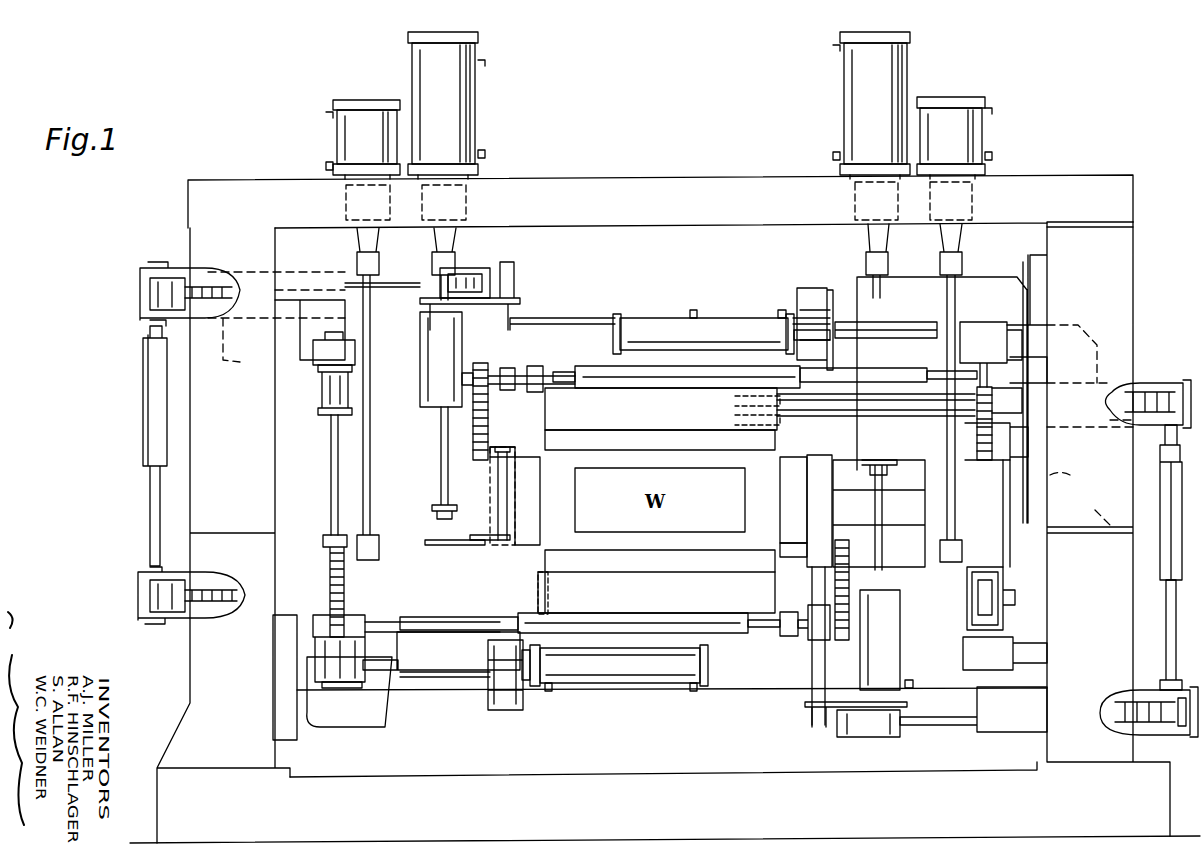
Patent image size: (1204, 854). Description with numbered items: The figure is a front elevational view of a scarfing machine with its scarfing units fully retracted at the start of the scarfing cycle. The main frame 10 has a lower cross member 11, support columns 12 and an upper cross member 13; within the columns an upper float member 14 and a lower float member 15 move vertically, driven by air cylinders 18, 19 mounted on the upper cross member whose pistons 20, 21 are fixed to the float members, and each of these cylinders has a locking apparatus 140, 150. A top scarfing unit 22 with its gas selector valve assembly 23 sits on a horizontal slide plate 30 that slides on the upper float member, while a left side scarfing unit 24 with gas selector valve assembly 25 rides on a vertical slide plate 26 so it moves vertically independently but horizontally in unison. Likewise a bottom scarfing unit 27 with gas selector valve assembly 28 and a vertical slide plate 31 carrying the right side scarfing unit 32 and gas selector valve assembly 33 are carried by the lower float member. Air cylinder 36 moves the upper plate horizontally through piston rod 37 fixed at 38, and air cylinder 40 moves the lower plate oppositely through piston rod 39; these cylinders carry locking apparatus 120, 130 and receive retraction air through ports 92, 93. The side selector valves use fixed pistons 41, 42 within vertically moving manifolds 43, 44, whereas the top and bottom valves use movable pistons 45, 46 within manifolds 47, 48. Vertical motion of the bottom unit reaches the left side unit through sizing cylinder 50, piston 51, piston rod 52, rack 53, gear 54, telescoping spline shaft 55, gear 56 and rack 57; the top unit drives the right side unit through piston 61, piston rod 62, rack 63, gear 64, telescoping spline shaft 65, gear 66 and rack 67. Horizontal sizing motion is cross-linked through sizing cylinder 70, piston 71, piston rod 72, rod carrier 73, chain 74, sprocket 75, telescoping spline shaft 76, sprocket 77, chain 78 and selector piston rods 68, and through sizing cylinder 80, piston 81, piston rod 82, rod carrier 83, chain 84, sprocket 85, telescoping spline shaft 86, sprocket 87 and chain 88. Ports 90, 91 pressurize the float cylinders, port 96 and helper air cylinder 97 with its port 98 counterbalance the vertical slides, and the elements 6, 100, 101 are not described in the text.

The main frame 10 is at (1150, 230).
The lower cross member 11 is at (465, 792).
The support columns 12 is at (210, 688).
The upper cross member 13 is at (207, 188).
The upper float member 14 is at (1008, 278).
The lower float member 15 is at (1012, 565).
The air cylinder 18 is at (465, 96).
The air cylinder 19 is at (350, 130).
The piston 20 is at (456, 242).
The piston 21 is at (384, 290).
The top scarfing unit 22 is at (641, 452).
The gas selector valve assembly 23 is at (702, 452).
The left side scarfing unit 24 is at (530, 521).
The gas selector valve assembly 25 is at (498, 541).
The vertical slide plate 26 is at (462, 542).
The bottom scarfing unit 27 is at (716, 566).
The gas selector valve assembly 28 is at (630, 580).
The horizontal slide plate 30 is at (590, 330).
The vertical slide plate 31 is at (905, 470).
The right side scarfing unit 32 is at (790, 478).
The gas selector valve assembly 33 is at (796, 530).
The air cylinder 36 is at (704, 332).
The piston rod 37 is at (862, 325).
The connection point 38 is at (1010, 286).
The piston rod 39 is at (390, 667).
The air cylinder 40 is at (598, 663).
The fixed piston 41 is at (509, 470).
The fixed piston 42 is at (832, 545).
The manifold 43 is at (497, 470).
The manifold 44 is at (818, 465).
The pistons 45 is at (735, 400).
The pistons 46 is at (538, 580).
The manifold 47 is at (512, 458).
The manifold 48 is at (772, 618).
The sizing cylinder 50 is at (1010, 634).
The piston 51 is at (990, 590).
The piston rod 52 is at (1012, 495).
The rack 53 is at (994, 412).
The gear 54 is at (1000, 368).
The telescoping spline shaft 55 is at (875, 373).
The gear 56 is at (522, 368).
The rack 57 is at (490, 416).
The bracket 6 is at (318, 368).
The piston 61 is at (330, 392).
The piston rod 62 is at (333, 503).
The rack 63 is at (347, 550).
The gear 64 is at (318, 645).
The telescoping spline shaft 65 is at (418, 654).
The gear 66 is at (812, 640).
The rack 67 is at (855, 566).
The selector piston rods 68 is at (838, 418).
The sizing cylinder 70 is at (826, 735).
The piston 71 is at (860, 733).
The piston rod 72 is at (948, 728).
The rod carrier 73 is at (1140, 696).
The chain 74 is at (1148, 722).
The sprocket 75 is at (1172, 724).
The telescoping spline shaft 76 is at (1164, 568).
The sprocket 77 is at (1175, 428).
The chain 78 is at (1148, 396).
The sizing cylinder 80 is at (490, 285).
The piston 81 is at (488, 274).
The piston rod 82 is at (357, 282).
The rod carrier 83 is at (190, 312).
The chain 84 is at (182, 285).
The sprocket 85 is at (150, 312).
The telescoping spline shaft 86 is at (150, 286).
The sprocket 87 is at (140, 614).
The chain 88 is at (182, 612).
The ports 90 is at (326, 165).
The ports 91 is at (485, 155).
The port 92 is at (690, 314).
The port 93 is at (690, 692).
The port 96 is at (913, 688).
The helper air cylinder 97 is at (420, 372).
The port 98 is at (425, 406).
The bracket 100 is at (548, 692).
The bracket 101 is at (778, 313).
The locking apparatus 120 is at (805, 288).
The locking apparatus 130 is at (502, 706).
The locking apparatus 140 is at (466, 200).
The locking apparatus 150 is at (351, 213).